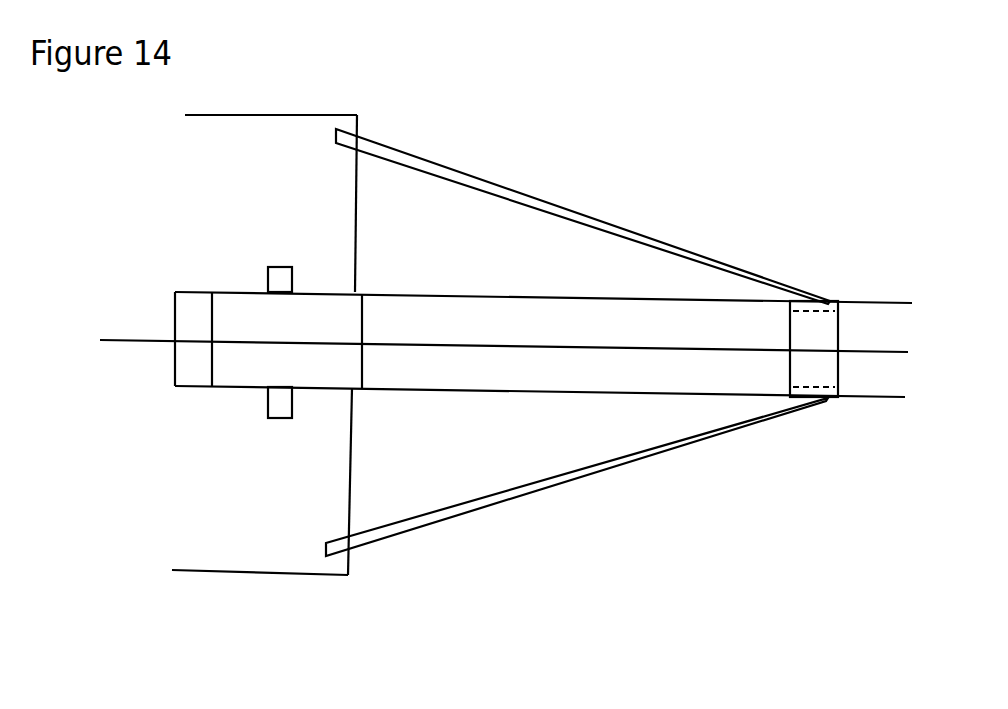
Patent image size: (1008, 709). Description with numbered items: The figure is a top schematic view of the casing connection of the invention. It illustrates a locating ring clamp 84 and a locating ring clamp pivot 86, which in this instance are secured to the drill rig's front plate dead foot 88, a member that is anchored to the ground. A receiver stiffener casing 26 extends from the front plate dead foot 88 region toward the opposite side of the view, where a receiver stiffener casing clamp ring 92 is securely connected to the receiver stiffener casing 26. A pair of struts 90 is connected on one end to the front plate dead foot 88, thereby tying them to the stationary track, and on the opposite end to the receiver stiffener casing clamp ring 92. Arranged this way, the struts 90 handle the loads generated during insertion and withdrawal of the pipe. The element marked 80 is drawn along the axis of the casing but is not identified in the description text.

The receiver stiffener casing 26 is at (193, 377).
The axis / centerline 80 is at (125, 341).
The locating ring clamp 84 is at (335, 313).
The locating ring clamp pivot 86 is at (282, 267).
The front plate dead foot 88 is at (257, 542).
The struts 90 is at (543, 202).
The receiver stiffener casing clamp ring 92 is at (828, 368).